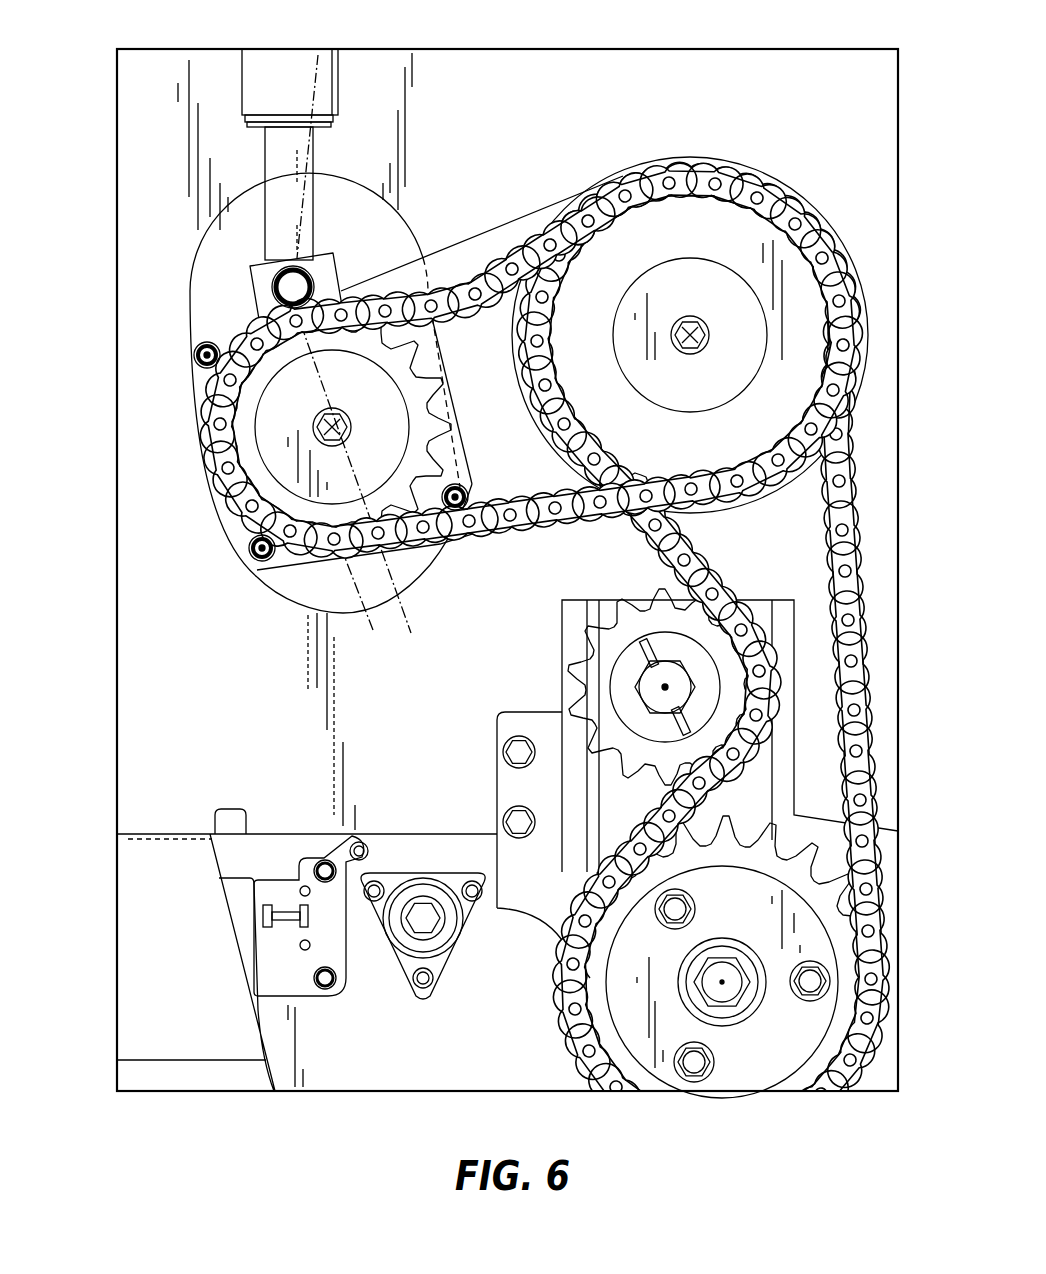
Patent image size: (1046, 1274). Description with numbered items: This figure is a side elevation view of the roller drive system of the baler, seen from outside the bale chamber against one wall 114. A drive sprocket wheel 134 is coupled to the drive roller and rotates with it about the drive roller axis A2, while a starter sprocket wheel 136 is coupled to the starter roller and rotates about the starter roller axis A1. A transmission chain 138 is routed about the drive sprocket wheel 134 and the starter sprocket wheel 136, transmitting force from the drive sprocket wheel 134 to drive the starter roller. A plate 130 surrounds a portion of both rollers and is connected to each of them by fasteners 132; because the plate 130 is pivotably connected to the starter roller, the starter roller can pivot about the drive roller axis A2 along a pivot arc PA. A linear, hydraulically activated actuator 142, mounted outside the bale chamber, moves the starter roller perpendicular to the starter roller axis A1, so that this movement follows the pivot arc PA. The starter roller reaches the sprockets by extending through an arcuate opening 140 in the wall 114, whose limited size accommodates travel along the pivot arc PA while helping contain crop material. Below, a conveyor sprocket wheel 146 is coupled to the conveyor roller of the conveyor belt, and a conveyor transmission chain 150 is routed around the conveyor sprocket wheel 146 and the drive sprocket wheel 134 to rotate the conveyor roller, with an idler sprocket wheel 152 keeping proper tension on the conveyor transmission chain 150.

The wall 114 is at (577, 97).
The plate 130 is at (455, 262).
The fasteners 132 is at (203, 372).
The drive sprocket wheel 134 is at (711, 232).
The starter sprocket wheel 136 is at (283, 487).
The transmission chain 138 is at (497, 268).
The opening 140 is at (215, 268).
The actuator 142 is at (325, 77).
The conveyor sprocket wheel 146 is at (840, 927).
The conveyor transmission chain 150 is at (847, 560).
The idler sprocket wheel 152 is at (597, 652).
The starter roller axis A1 is at (349, 417).
The drive roller axis A2 is at (688, 356).
The pivot arc PA is at (352, 486).